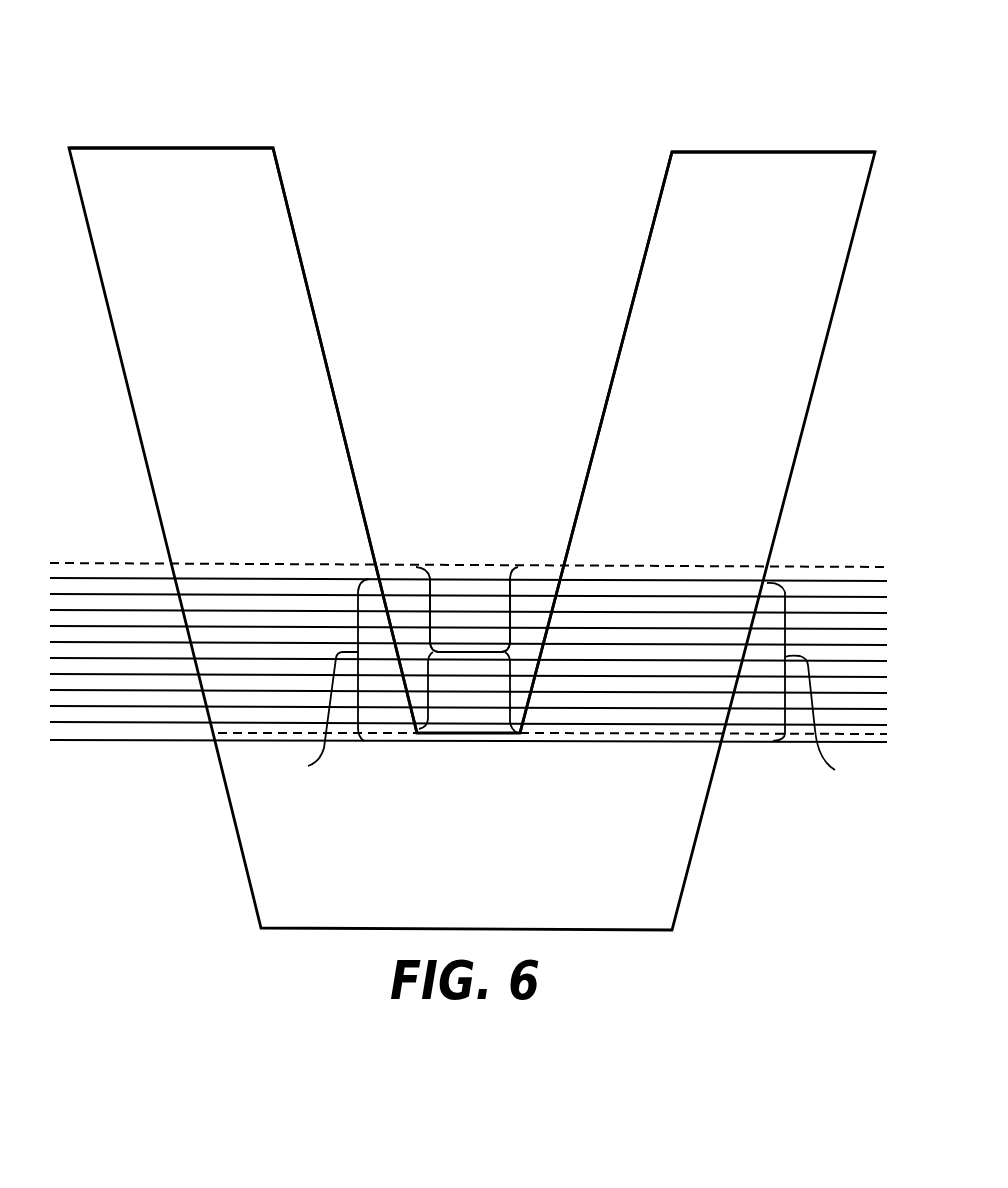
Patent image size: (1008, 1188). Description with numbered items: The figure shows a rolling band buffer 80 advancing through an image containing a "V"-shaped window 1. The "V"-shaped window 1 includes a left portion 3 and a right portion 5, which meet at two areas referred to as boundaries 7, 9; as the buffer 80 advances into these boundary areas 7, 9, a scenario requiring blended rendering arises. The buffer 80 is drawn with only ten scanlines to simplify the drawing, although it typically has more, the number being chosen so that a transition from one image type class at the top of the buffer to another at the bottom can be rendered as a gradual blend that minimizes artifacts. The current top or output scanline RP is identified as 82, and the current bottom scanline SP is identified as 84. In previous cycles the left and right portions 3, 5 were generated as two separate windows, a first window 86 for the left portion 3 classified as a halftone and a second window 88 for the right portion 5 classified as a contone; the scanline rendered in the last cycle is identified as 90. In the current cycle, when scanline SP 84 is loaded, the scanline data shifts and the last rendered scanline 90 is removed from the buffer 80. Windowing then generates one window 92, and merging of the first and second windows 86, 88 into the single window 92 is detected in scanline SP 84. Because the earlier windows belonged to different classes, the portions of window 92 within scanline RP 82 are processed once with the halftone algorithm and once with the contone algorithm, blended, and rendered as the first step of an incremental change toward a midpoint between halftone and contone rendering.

The "V"-shaped window 1 is at (505, 130).
The left portion 3 is at (302, 258).
The right portion 5 is at (642, 258).
The boundary 7 is at (383, 735).
The boundary 9 is at (602, 735).
The rolling band buffer 80 is at (488, 473).
The scanline RP 82 is at (814, 583).
The scanline SP 84 is at (143, 742).
The first window 86 is at (445, 645).
The second window 88 is at (494, 645).
The last rendered scanline 90 is at (607, 567).
The single window 92 is at (576, 683).